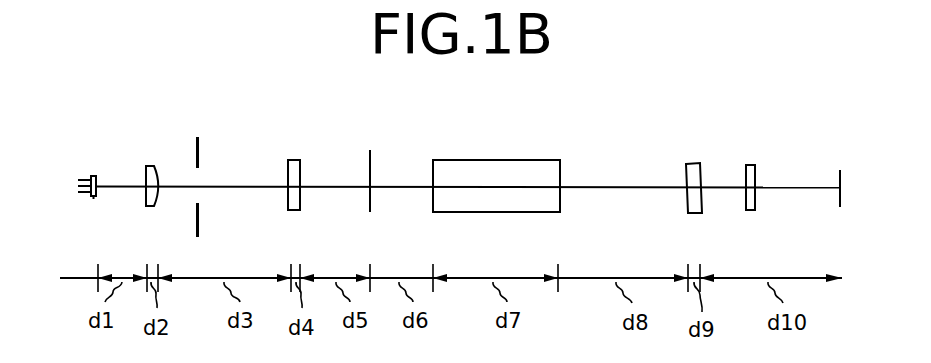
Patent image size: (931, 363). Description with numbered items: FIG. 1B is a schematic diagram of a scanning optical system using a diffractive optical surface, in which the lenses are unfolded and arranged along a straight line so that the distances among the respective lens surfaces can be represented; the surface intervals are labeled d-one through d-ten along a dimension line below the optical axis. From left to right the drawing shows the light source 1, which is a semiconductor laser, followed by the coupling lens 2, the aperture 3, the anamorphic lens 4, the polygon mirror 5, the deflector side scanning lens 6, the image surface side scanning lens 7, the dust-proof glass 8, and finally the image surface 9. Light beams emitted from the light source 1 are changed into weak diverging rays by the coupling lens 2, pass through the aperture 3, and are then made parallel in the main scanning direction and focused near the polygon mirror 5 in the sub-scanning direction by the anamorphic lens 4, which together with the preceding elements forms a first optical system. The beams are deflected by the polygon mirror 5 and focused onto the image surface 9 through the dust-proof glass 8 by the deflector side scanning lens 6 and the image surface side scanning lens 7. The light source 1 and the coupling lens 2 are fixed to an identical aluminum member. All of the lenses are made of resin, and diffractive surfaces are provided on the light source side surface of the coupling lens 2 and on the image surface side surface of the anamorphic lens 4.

The light source 1 is at (92, 174).
The coupling lens 2 is at (155, 165).
The aperture 3 is at (198, 136).
The anamorphic lens 4 is at (298, 159).
The polygon mirror 5 is at (370, 158).
The deflector side scanning lens 6 is at (534, 160).
The image surface side scanning lens 7 is at (697, 163).
The dust-proof glass 8 is at (754, 163).
The image surface 9 is at (840, 170).